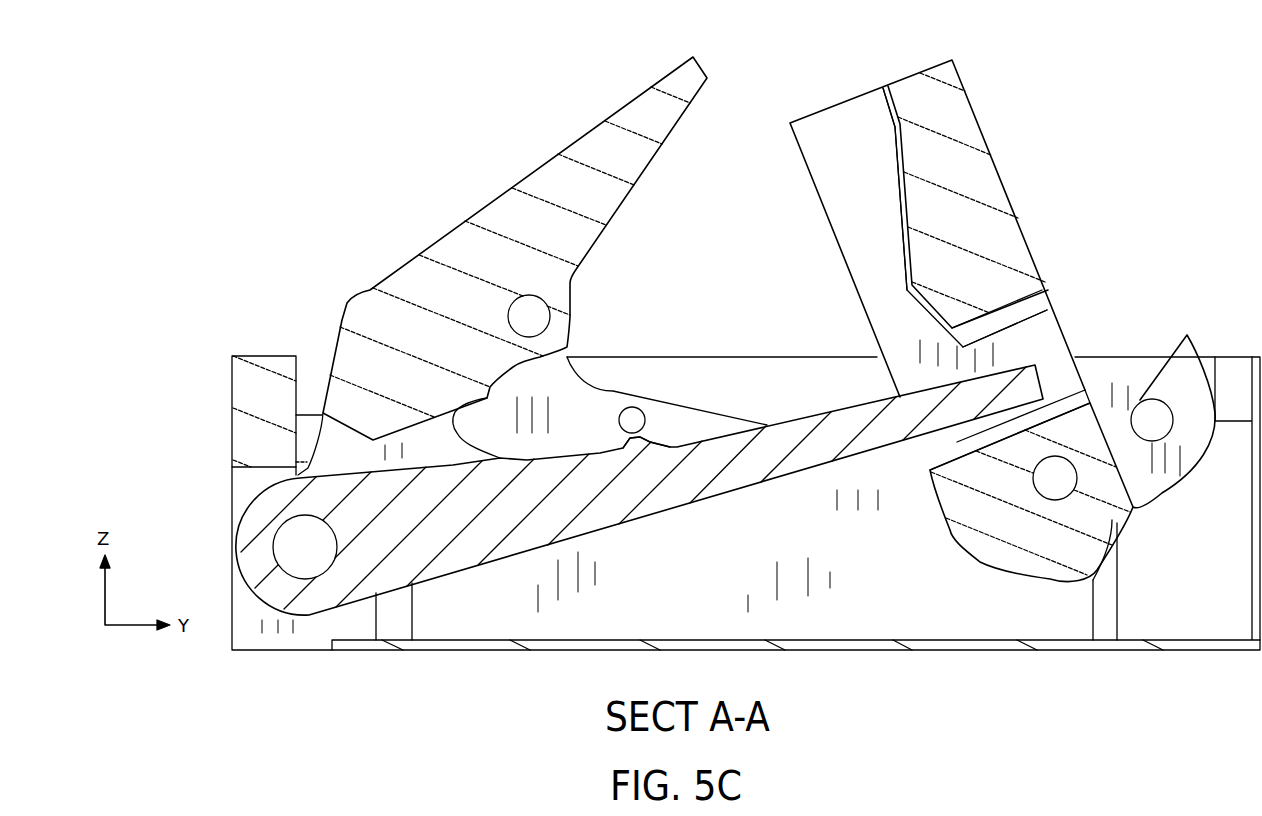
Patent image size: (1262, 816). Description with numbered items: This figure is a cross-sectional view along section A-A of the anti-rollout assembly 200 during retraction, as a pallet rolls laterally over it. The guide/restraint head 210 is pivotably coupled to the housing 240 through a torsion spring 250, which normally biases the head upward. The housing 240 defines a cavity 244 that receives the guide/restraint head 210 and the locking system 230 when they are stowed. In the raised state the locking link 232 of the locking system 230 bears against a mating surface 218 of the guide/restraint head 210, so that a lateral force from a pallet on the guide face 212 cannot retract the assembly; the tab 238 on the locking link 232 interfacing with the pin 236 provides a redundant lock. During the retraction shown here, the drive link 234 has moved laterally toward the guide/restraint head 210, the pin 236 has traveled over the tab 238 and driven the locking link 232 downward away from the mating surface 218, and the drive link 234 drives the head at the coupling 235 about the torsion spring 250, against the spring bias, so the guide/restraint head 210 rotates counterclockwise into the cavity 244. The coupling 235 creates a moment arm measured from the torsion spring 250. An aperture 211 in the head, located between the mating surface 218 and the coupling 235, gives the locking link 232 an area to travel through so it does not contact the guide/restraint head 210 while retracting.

The anti-rollout assembly 200 is at (208, 170).
The guide/restraint head 210 is at (915, 115).
The aperture 211 is at (1062, 356).
The guide face 212 is at (1012, 200).
The mating surface 218 is at (930, 307).
The locking system 230 is at (758, 285).
The locking link 232 is at (467, 530).
The drive link 234 is at (775, 485).
The coupling 235 is at (1052, 478).
The pin 236 is at (632, 418).
The tab 238 is at (652, 440).
The housing 240 is at (263, 433).
The cavity 244 is at (1052, 629).
The torsion spring 250 is at (1152, 420).